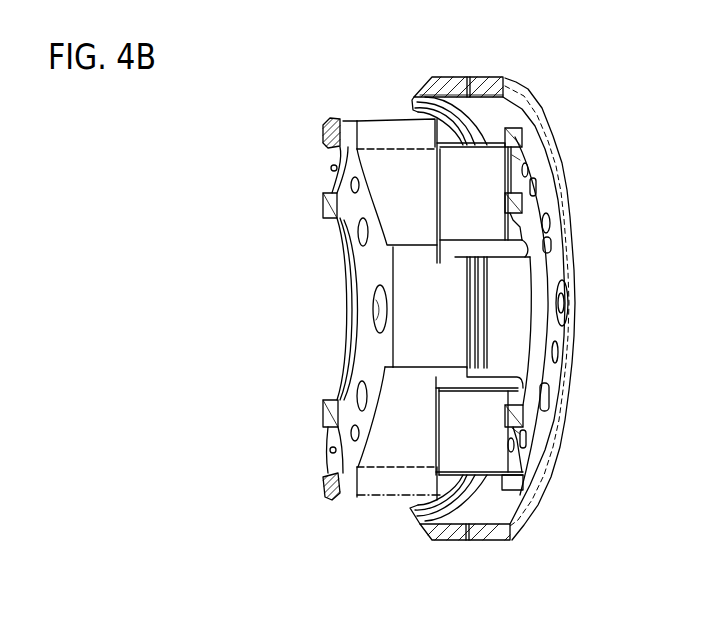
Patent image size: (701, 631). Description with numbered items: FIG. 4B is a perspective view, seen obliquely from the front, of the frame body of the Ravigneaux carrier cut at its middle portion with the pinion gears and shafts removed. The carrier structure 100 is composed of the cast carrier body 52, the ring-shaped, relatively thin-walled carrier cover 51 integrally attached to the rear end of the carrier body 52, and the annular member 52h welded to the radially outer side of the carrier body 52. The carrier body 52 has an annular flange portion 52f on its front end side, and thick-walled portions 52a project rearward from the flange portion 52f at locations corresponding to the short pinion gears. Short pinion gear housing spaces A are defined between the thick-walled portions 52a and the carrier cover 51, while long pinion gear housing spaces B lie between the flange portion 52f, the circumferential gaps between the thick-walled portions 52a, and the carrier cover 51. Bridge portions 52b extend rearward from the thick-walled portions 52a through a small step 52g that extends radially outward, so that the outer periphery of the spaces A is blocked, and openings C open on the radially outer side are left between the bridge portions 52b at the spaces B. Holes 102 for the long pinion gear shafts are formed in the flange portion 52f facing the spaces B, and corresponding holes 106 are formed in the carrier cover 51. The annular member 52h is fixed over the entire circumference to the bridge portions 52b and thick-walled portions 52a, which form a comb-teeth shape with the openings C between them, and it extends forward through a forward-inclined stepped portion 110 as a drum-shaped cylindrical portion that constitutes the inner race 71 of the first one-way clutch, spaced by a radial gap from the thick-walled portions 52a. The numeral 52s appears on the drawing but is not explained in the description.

The carrier structure 100 is at (322, 70).
The carrier cover 51 is at (326, 235).
The carrier body 52 is at (573, 194).
The thick-walled portion 52a is at (457, 231).
The bridge portion 52b is at (390, 133).
The flange portion 52f is at (560, 255).
The small step 52g is at (443, 487).
The annular member 52h is at (427, 68).
The stator slot 52s is at (365, 120).
The inner race 71 is at (500, 78).
The hole for long pinion gear shaft 102 is at (517, 157).
The hole for long pinion gear shaft 106 is at (374, 326).
The stepped portion 110 is at (420, 92).
The short pinion gear housing space A is at (382, 170).
The long pinion gear housing space B is at (520, 347).
The opening C is at (405, 280).